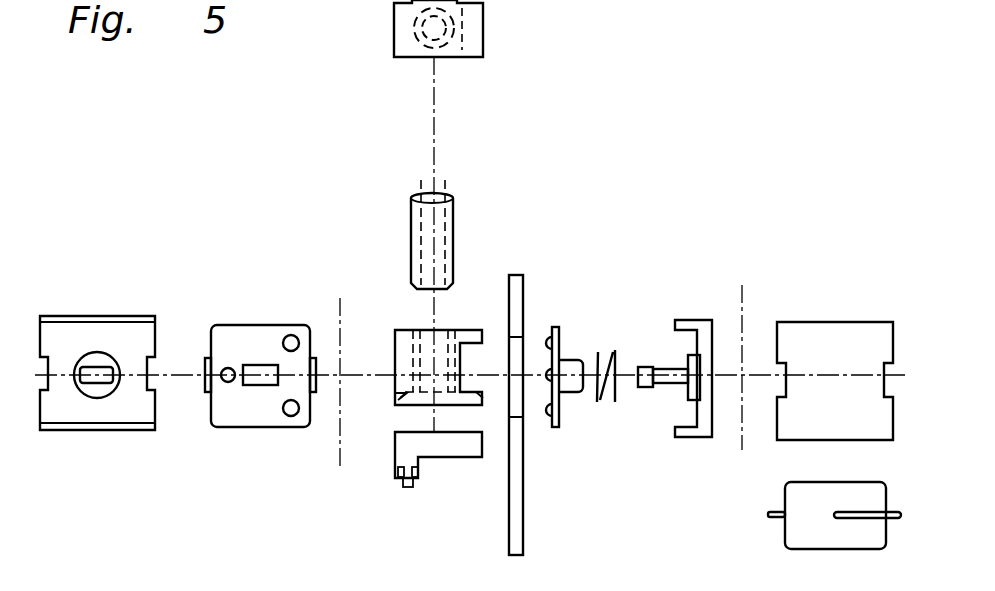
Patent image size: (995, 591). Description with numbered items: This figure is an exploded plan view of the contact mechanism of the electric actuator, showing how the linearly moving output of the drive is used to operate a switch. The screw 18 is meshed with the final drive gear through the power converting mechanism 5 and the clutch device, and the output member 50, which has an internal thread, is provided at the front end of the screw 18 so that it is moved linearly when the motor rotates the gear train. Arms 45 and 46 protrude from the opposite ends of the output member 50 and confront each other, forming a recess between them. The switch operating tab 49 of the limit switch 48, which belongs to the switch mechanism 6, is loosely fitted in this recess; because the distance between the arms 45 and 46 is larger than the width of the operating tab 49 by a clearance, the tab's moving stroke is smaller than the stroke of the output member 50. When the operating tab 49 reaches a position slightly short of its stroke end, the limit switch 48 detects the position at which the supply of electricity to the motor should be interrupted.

The power converting mechanism 5 is at (474, 192).
The screw 18 is at (412, 250).
The arm 46 is at (473, 330).
The arm 45 is at (482, 397).
The output member 50 is at (404, 392).
The switch mechanism 6 is at (625, 421).
The switch operating tab 49 is at (645, 367).
The limit switch 48 is at (832, 343).